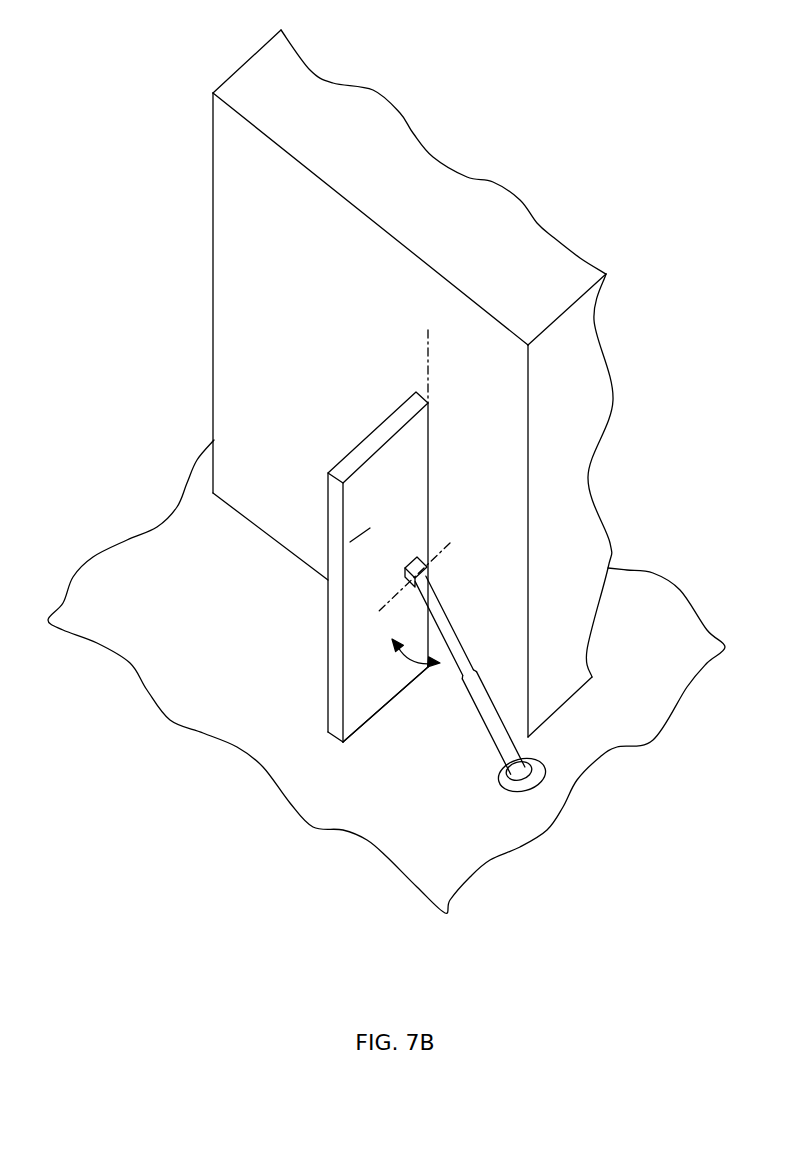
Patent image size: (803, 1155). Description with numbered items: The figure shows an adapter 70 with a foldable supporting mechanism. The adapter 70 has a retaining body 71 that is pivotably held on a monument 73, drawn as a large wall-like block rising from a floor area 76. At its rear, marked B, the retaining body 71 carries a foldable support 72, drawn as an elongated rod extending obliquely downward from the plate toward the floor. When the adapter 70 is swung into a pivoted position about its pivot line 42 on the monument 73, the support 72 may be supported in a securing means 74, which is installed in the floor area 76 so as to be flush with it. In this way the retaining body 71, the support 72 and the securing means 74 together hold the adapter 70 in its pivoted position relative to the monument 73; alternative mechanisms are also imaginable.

The adapter 70 is at (380, 403).
The retaining body 71 is at (363, 670).
The foldable support 72 is at (455, 633).
The monument 73 is at (288, 247).
The securing means 74 is at (543, 750).
The floor area 76 is at (160, 638).
The pivot axis 42 is at (430, 357).